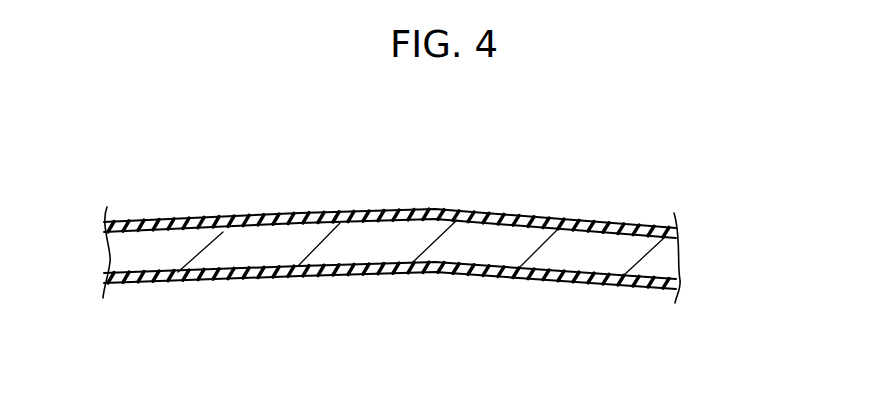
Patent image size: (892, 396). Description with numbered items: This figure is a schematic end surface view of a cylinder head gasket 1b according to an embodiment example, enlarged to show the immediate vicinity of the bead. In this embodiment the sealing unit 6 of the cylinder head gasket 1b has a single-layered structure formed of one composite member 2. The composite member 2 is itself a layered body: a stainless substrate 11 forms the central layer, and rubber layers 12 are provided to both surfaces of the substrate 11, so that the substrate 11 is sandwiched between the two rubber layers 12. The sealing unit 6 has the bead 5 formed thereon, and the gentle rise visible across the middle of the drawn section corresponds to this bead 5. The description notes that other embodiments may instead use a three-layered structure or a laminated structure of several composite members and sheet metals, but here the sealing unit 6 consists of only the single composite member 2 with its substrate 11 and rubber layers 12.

The cylinder head gasket 1b is at (662, 178).
The composite member 2 is at (748, 215).
The rubber layer 12 is at (666, 235).
The stainless substrate 11 is at (660, 258).
The bead 5 is at (417, 233).
The sealing unit 6 is at (388, 240).